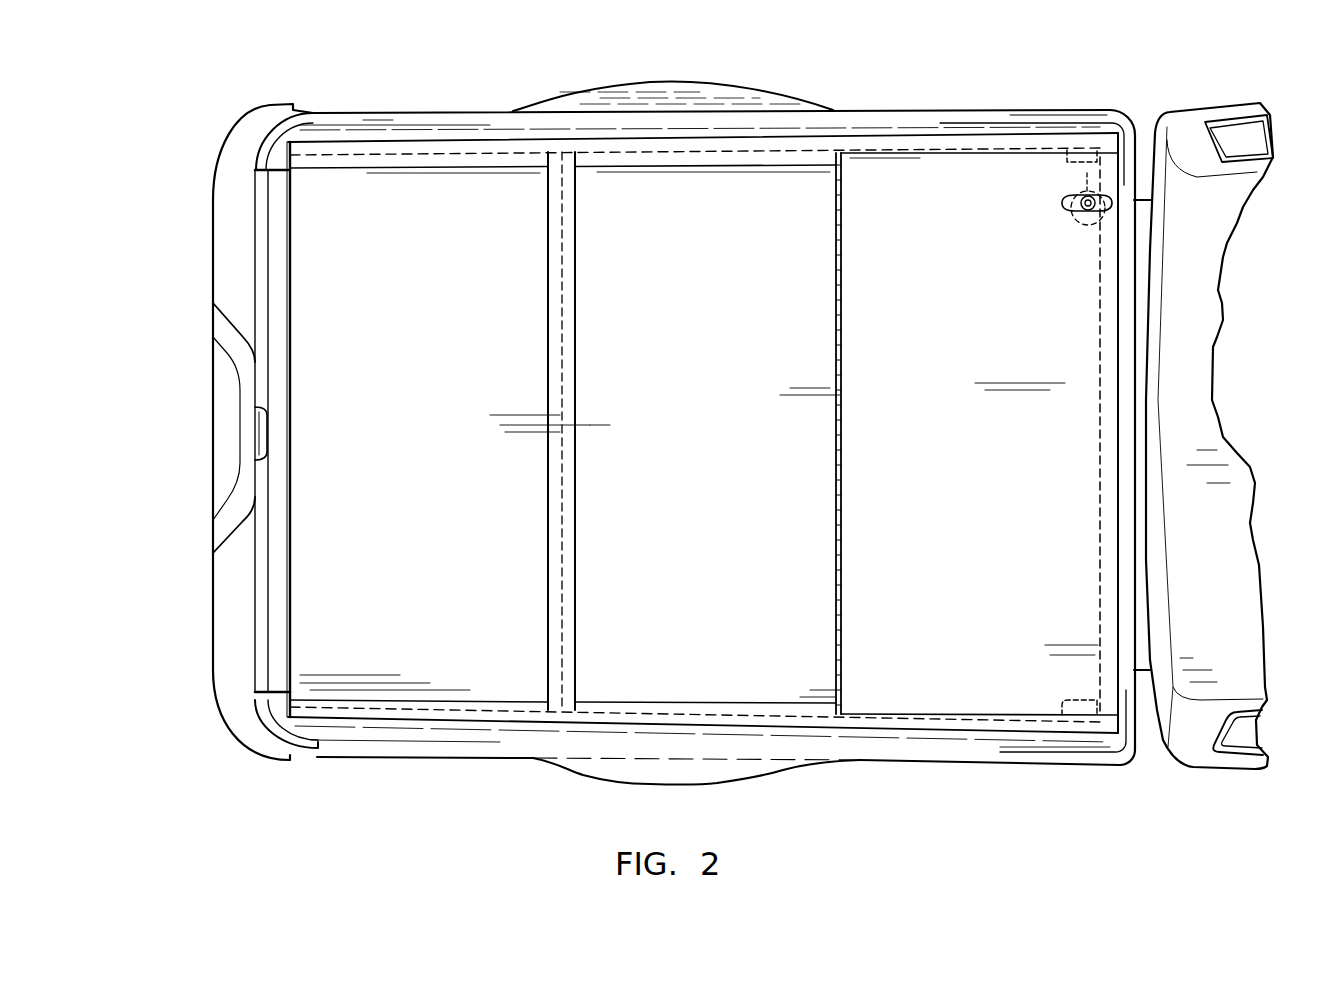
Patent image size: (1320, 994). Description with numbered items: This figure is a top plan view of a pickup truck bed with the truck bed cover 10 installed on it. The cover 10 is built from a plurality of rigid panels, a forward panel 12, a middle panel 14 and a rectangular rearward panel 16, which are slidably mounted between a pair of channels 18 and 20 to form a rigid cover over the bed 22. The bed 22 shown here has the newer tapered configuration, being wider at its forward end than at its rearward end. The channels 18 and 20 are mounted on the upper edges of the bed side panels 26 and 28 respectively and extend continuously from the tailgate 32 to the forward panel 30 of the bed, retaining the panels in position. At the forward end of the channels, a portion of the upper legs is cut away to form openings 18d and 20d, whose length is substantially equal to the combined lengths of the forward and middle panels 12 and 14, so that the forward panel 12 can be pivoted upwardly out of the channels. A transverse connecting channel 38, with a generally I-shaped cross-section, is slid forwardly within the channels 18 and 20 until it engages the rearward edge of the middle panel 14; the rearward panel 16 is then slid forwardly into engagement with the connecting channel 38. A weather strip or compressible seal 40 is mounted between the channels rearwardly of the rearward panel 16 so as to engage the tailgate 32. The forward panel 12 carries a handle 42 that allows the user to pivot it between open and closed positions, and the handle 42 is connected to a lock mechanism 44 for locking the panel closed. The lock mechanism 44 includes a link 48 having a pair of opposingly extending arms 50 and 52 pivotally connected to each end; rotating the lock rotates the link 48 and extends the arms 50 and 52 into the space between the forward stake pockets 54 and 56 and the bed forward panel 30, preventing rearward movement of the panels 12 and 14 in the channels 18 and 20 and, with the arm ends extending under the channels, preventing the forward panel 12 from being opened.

The truck bed cover 10 is at (1045, 102).
The forward panel 12 is at (980, 496).
The middle panel 14 is at (710, 451).
The rearward panel 16 is at (448, 451).
The channel 18 is at (767, 722).
The opening 18d is at (993, 717).
The channel 20 is at (777, 140).
The opening 20d is at (967, 150).
The bed 22 is at (488, 140).
The side panel 26 is at (862, 765).
The side panel 28 is at (875, 108).
The forward panel 30 is at (1127, 422).
The tailgate 32 is at (262, 578).
The transverse connecting channel 38 is at (573, 590).
The compressible seal 40 is at (283, 612).
The handle 42 is at (1067, 203).
The lock mechanism 44 is at (1068, 218).
The link 48 is at (1092, 217).
The arm 50 is at (1087, 173).
The arm 52 is at (1082, 505).
The forward stake pocket 54 is at (1083, 155).
The forward stake pocket 56 is at (1070, 700).